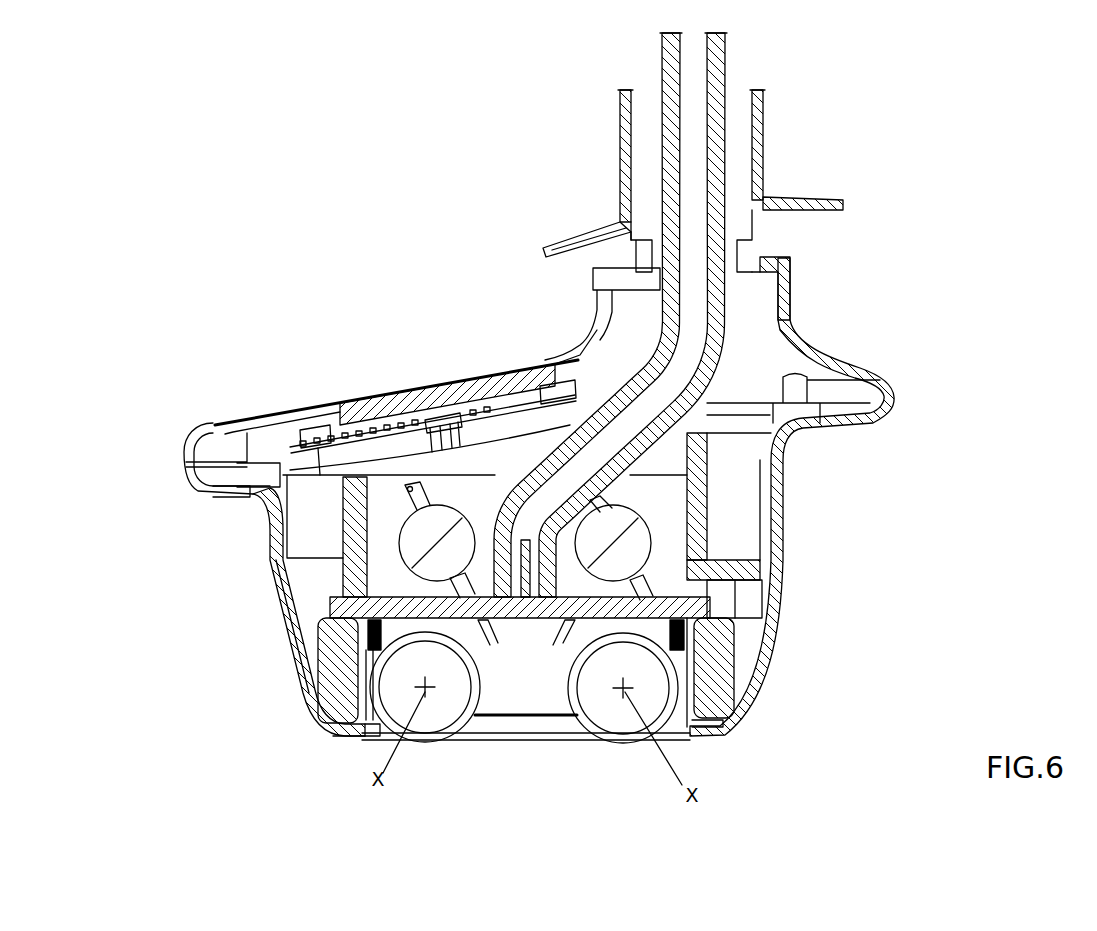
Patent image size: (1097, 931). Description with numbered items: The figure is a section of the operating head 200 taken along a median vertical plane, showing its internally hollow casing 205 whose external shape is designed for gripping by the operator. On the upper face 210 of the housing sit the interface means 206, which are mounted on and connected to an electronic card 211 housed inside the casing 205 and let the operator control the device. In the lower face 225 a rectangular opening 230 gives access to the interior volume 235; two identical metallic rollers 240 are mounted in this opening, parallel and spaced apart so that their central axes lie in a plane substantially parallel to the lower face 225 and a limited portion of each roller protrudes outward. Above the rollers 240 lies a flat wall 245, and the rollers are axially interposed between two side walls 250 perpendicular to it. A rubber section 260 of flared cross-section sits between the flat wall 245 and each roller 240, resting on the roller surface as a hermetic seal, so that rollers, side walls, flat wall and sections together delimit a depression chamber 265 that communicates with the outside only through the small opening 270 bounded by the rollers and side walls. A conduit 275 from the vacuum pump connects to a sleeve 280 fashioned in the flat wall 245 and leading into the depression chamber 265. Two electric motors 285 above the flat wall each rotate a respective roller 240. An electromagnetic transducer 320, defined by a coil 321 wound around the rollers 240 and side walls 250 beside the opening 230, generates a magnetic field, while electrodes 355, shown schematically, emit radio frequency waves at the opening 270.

The operating head 200 is at (878, 137).
The casing 205 is at (200, 460).
The interface means 206 is at (383, 390).
The upper face 210 is at (310, 385).
The electronic card 211 is at (310, 427).
The lower face 225 is at (347, 742).
The opening 230 is at (372, 738).
The interior volume 235 is at (738, 492).
The rollers 240 is at (433, 742).
The flat wall 245 is at (722, 635).
The side walls 250 is at (492, 707).
The section 260 is at (405, 618).
The depression chamber 265 is at (506, 684).
The opening 270 is at (535, 752).
The conduit 275 is at (663, 355).
The sleeve 280 is at (497, 530).
The electric motors 285 is at (420, 543).
The electromagnetic transducer 320 is at (745, 618).
The coil 321 is at (330, 670).
The electrodes 355 is at (338, 631).